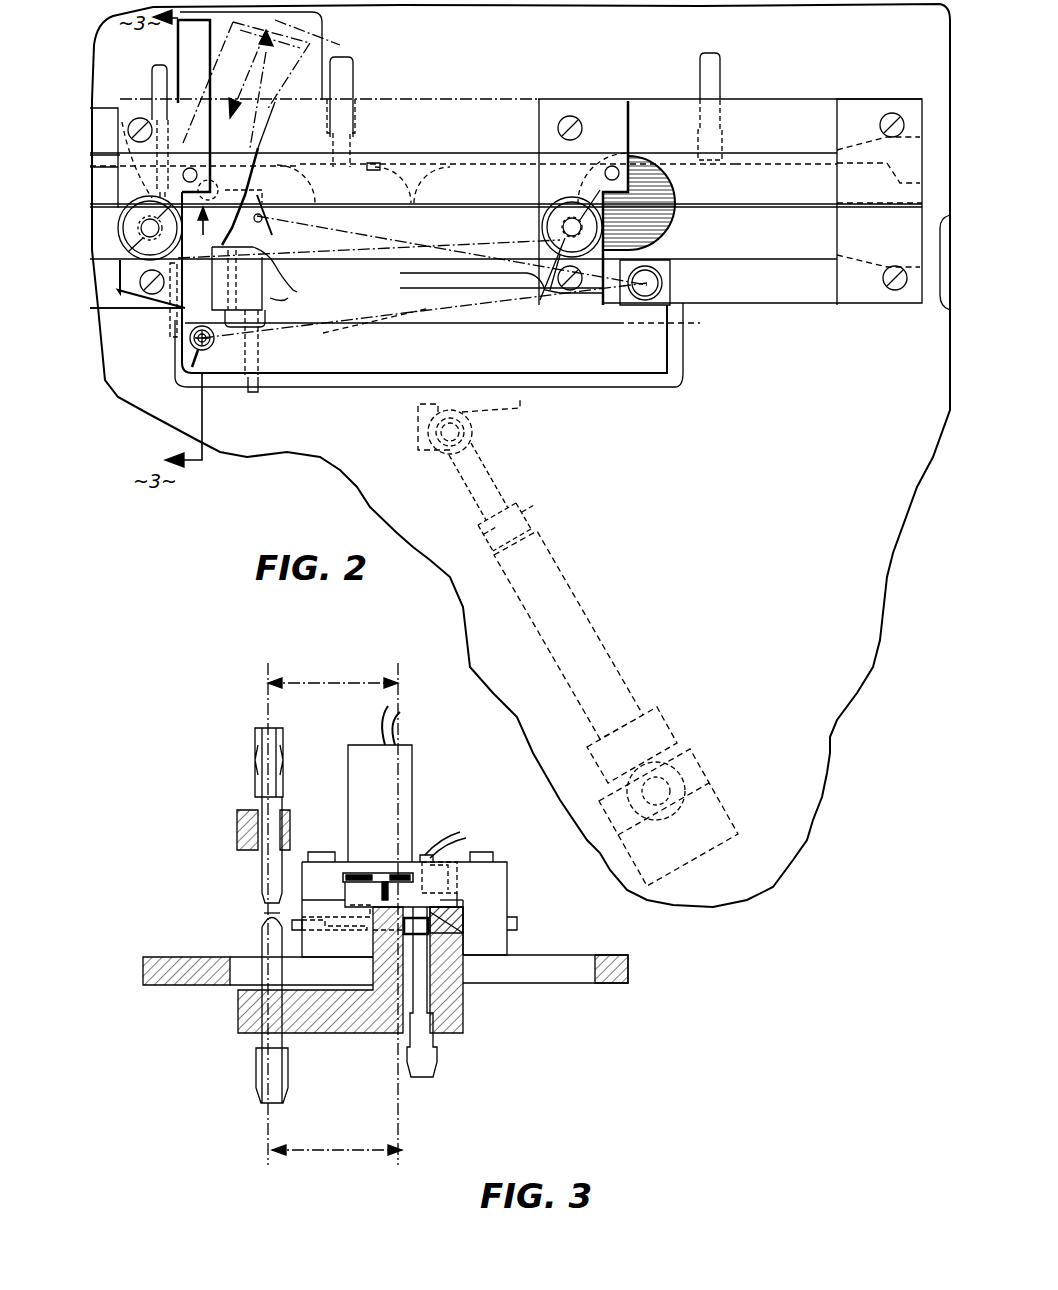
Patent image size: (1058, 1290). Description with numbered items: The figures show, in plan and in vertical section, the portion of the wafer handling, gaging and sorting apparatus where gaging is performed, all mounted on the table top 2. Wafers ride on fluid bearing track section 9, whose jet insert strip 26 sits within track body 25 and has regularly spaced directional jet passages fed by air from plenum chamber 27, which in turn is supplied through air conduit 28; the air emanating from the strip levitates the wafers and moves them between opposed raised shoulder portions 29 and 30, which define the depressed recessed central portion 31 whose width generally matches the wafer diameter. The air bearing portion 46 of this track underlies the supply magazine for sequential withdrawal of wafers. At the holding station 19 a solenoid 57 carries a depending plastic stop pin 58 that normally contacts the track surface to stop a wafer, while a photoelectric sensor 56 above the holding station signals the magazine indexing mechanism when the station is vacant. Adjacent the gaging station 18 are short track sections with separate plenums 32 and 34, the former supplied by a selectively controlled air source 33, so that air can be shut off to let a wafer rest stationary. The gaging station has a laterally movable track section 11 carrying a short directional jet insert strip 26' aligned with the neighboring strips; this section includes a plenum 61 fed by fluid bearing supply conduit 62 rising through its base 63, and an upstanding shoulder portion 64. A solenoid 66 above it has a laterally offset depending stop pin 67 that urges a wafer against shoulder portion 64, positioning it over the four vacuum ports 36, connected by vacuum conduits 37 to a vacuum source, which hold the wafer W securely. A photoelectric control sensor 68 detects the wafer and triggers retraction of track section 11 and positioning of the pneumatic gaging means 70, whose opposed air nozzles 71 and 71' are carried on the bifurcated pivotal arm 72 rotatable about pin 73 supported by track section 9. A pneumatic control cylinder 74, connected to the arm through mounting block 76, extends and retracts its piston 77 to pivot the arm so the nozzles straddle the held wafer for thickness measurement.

In FIG. 2, the table top 2 is at (775, 540).
In FIG. 3, the table top 2 is at (178, 955).
In FIG. 2, the fluid bearing track section 9 is at (812, 130).
In FIG. 2, the movable track section 11 is at (276, 72).
In FIG. 3, the movable track section 11 is at (452, 922).
In FIG. 2, the gaging station 18 is at (230, 420).
In FIG. 2, the holding station 19 is at (652, 130).
In FIG. 2, the track body 25 is at (734, 240).
In FIG. 2, the jet insert strip 26 is at (288, 167).
In FIG. 2, the directional jet insert strip 26' is at (216, 224).
In FIG. 3, the directional jet insert strip 26' is at (367, 942).
In FIG. 2, the plenum chamber 27 is at (758, 150).
In FIG. 2, the air conduit 28 is at (722, 66).
In FIG. 2, the raised shoulder portion 29 is at (734, 305).
In FIG. 2, the raised shoulder portion 30 is at (742, 122).
In FIG. 2, the depressed recessed central portion 31 is at (438, 156).
In FIG. 2, the plenum 32 is at (381, 153).
In FIG. 2, the air source 33 is at (356, 78).
In FIG. 2, the plenum 34 is at (104, 158).
In FIG. 2, the vacuum ports 36 is at (132, 108).
In FIG. 3, the vacuum ports 36 is at (350, 905).
In FIG. 2, the vacuum conduits 37 is at (155, 82).
In FIG. 3, the vacuum conduits 37 is at (290, 927).
In FIG. 2, the air bearing portion 46 is at (940, 300).
In FIG. 2, the photoelectric sensor 56 is at (613, 165).
In FIG. 2, the solenoid 57 is at (548, 228).
In FIG. 2, the stop pin 58 is at (565, 222).
In FIG. 2, the plenum 61 is at (275, 191).
In FIG. 3, the plenum 61 is at (435, 932).
In FIG. 2, the fluid bearing supply conduit 62 is at (270, 224).
In FIG. 3, the fluid bearing supply conduit 62 is at (428, 985).
In FIG. 2, the base 63 is at (268, 316).
In FIG. 3, the base 63 is at (464, 1014).
In FIG. 2, the upstanding shoulder portion 64 is at (300, 42).
In FIG. 3, the upstanding shoulder portion 64 is at (450, 905).
In FIG. 2, the solenoid 66 is at (114, 312).
In FIG. 3, the solenoid 66 is at (414, 780).
In FIG. 2, the stop pin 67 is at (120, 243).
In FIG. 3, the stop pin 67 is at (385, 872).
In FIG. 2, the photoelectric control sensor 68 is at (262, 179).
In FIG. 3, the photoelectric control sensor 68 is at (476, 846).
In FIG. 2, the gaging means 70 is at (196, 362).
In FIG. 3, the gaging means 70 is at (256, 890).
In FIG. 2, the air nozzle 71 is at (239, 345).
In FIG. 3, the air nozzle 71 is at (249, 815).
In FIG. 3, the air nozzle 71' is at (236, 1011).
In FIG. 2, the bifurcated pivotal arm 72 is at (330, 368).
In FIG. 3, the bifurcated pivotal arm 72 is at (240, 822).
In FIG. 2, the pin 73 is at (664, 284).
In FIG. 2, the pneumatic control cylinder 74 is at (592, 628).
In FIG. 2, the mounting block 76 is at (513, 412).
In FIG. 2, the piston 77 is at (505, 492).
In FIG. 2, the wafer W is at (672, 222).
In FIG. 3, the wafer W is at (503, 872).